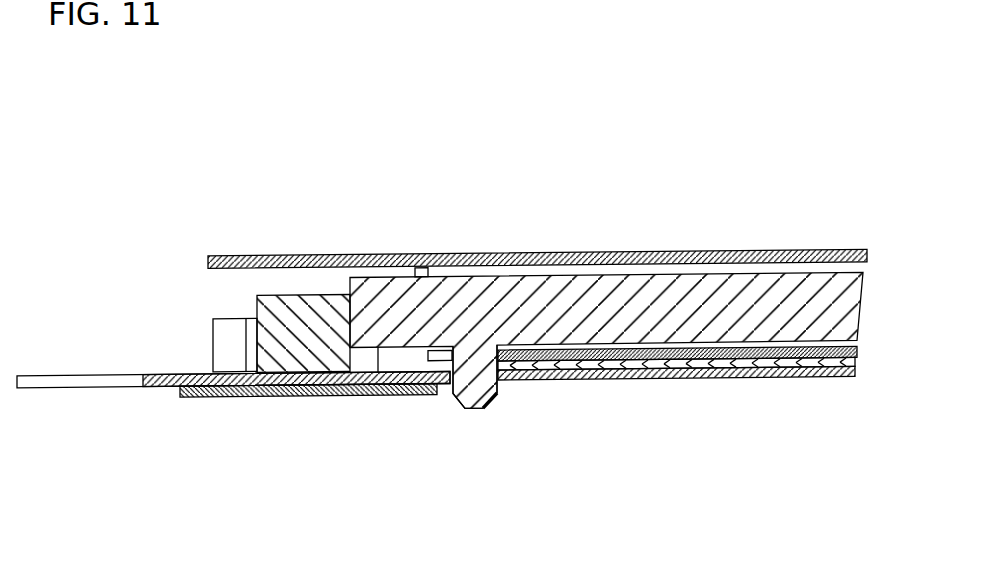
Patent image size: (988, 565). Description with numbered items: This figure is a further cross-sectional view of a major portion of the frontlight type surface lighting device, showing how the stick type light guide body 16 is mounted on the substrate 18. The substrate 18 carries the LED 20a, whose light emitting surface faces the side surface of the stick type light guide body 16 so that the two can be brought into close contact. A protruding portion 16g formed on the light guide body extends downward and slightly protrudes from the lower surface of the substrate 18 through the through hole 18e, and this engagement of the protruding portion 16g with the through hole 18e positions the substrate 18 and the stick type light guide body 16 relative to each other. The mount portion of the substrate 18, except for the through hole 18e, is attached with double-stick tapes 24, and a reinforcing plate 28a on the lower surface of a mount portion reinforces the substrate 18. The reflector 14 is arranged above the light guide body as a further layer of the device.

The reflector 14 is at (313, 255).
The stick type light guide body 16 is at (717, 330).
The protruding portion 16g is at (465, 399).
The substrate 18 is at (212, 414).
The through hole 18e is at (503, 404).
The LED 20a is at (303, 367).
The double-stick tape 24 is at (852, 370).
The reinforcing plate 28a is at (180, 393).